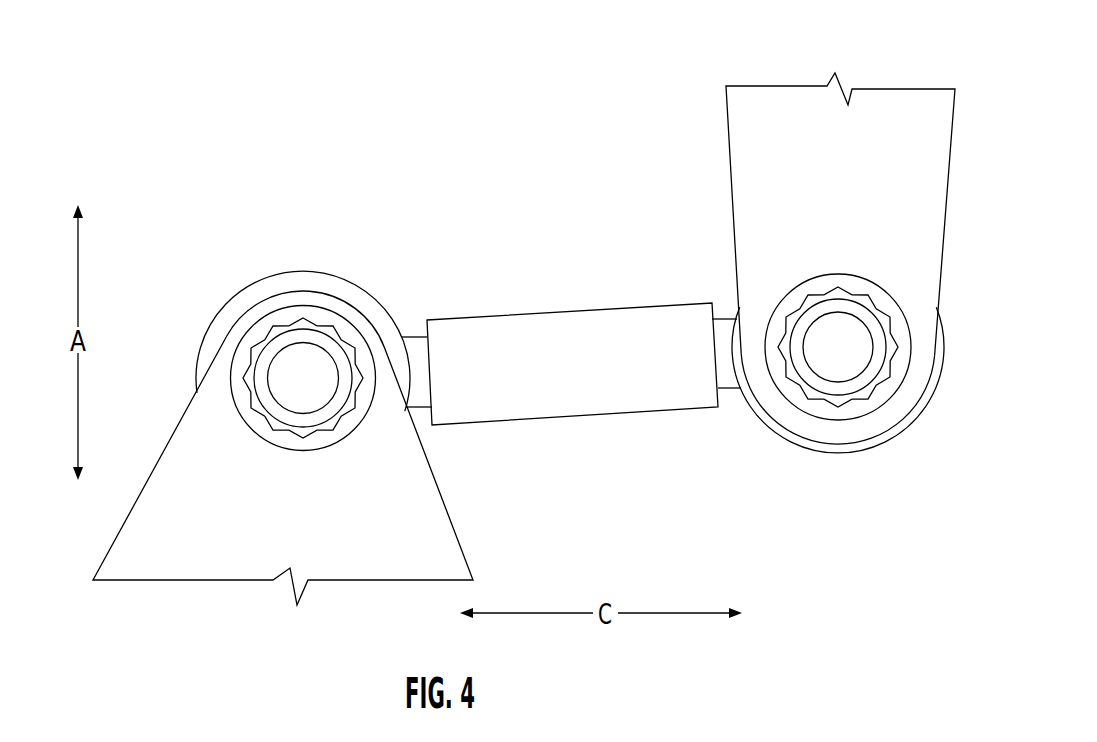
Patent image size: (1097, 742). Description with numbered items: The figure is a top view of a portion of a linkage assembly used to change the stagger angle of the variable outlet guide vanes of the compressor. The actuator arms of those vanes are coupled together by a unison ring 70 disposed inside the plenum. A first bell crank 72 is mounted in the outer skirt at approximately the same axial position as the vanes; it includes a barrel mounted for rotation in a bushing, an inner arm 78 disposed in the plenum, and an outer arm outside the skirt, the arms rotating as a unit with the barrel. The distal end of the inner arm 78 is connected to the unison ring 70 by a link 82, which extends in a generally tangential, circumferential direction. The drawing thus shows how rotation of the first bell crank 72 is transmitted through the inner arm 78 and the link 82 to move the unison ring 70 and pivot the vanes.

The unison ring 70 is at (208, 540).
The first bell crank 72 is at (795, 240).
The inner arm 78 is at (750, 175).
The link 82 is at (562, 383).